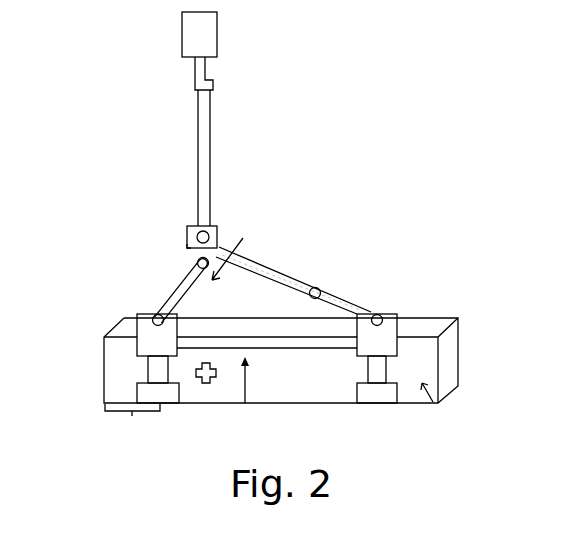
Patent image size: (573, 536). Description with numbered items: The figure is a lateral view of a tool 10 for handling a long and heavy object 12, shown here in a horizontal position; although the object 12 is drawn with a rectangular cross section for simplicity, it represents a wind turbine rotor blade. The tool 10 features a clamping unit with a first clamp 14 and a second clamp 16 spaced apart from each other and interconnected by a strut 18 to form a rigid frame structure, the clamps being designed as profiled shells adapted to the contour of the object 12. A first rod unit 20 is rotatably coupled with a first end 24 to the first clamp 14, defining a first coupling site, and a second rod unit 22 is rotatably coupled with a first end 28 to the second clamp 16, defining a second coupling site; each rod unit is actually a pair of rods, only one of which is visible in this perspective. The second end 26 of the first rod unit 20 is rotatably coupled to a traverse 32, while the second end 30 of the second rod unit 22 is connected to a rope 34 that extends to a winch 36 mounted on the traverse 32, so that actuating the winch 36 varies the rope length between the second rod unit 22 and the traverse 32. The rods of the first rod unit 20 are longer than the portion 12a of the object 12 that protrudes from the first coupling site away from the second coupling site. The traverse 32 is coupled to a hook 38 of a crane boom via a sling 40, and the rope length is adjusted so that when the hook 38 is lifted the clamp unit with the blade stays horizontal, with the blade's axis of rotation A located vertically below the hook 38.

The tool 10 is at (444, 148).
The object 12 is at (440, 318).
The portion of the object 12a is at (132, 423).
The first clamp 14 is at (145, 345).
The second clamp 16 is at (398, 352).
The strut 18 is at (320, 338).
The first rod unit 20 is at (178, 284).
The second rod unit 22 is at (373, 313).
The first end of first rod unit rod 24 is at (155, 311).
The second end of first rod unit rod 26 is at (185, 262).
The first end of second rod unit rod 28 is at (380, 313).
The second end of second rod unit rod 30 is at (318, 284).
The traverse 32 is at (187, 247).
The rope 34 is at (268, 266).
The winch 36 is at (220, 241).
The hook 38 is at (208, 37).
The sling 40 is at (206, 118).
The axis of rotation A is at (208, 385).